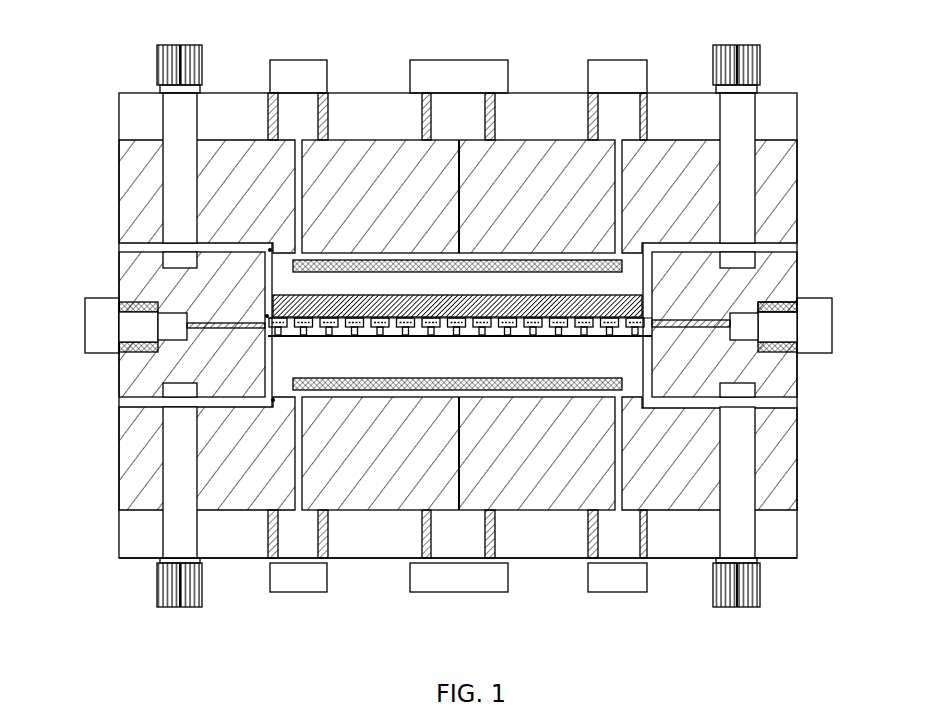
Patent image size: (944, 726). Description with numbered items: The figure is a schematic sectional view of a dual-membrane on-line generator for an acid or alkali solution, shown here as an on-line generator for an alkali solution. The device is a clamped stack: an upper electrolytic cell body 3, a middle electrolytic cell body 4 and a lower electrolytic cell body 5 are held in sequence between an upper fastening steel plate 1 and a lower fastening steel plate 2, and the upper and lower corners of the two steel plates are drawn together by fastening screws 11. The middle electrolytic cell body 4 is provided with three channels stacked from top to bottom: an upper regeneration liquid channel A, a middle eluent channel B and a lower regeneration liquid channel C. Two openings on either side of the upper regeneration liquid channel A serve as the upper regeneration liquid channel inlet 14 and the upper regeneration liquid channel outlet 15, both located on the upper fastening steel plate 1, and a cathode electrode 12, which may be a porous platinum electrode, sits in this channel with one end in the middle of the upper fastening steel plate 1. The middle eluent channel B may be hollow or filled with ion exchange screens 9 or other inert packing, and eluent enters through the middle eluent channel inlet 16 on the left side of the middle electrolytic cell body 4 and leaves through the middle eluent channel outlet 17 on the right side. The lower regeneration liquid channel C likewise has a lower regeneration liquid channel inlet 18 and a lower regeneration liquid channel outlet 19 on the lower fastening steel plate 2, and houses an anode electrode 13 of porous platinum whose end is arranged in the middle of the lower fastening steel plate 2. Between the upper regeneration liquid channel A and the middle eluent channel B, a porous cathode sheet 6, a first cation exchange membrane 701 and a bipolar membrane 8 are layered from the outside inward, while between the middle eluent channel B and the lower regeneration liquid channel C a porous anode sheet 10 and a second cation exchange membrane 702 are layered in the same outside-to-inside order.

The upper fastening steel plate 1 is at (777, 120).
The lower fastening steel plate 2 is at (777, 537).
The upper electrolytic cell body 3 is at (783, 193).
The middle electrolytic cell body 4 is at (785, 363).
The lower electrolytic cell body 5 is at (783, 458).
The porous cathode sheet 6 is at (610, 285).
The first cation exchange membrane 701 is at (612, 292).
The second cation exchange membrane 702 is at (612, 358).
The bipolar membrane 8 is at (645, 300).
The ion exchange screen 9 is at (803, 302).
The porous anode sheet 10 is at (648, 390).
The fastening screw 11 is at (738, 63).
The cathode electrode 12 is at (458, 80).
The anode electrode 13 is at (457, 580).
The upper regeneration liquid channel inlet 14 is at (618, 75).
The upper regeneration liquid channel outlet 15 is at (297, 78).
The middle eluent channel inlet 16 is at (138, 325).
The middle eluent channel outlet 17 is at (785, 325).
The lower regeneration liquid channel inlet 18 is at (618, 575).
The lower regeneration liquid channel outlet 19 is at (300, 580).
The upper regeneration liquid channel A is at (270, 250).
The middle eluent channel B is at (267, 315).
The lower regeneration liquid channel C is at (273, 400).